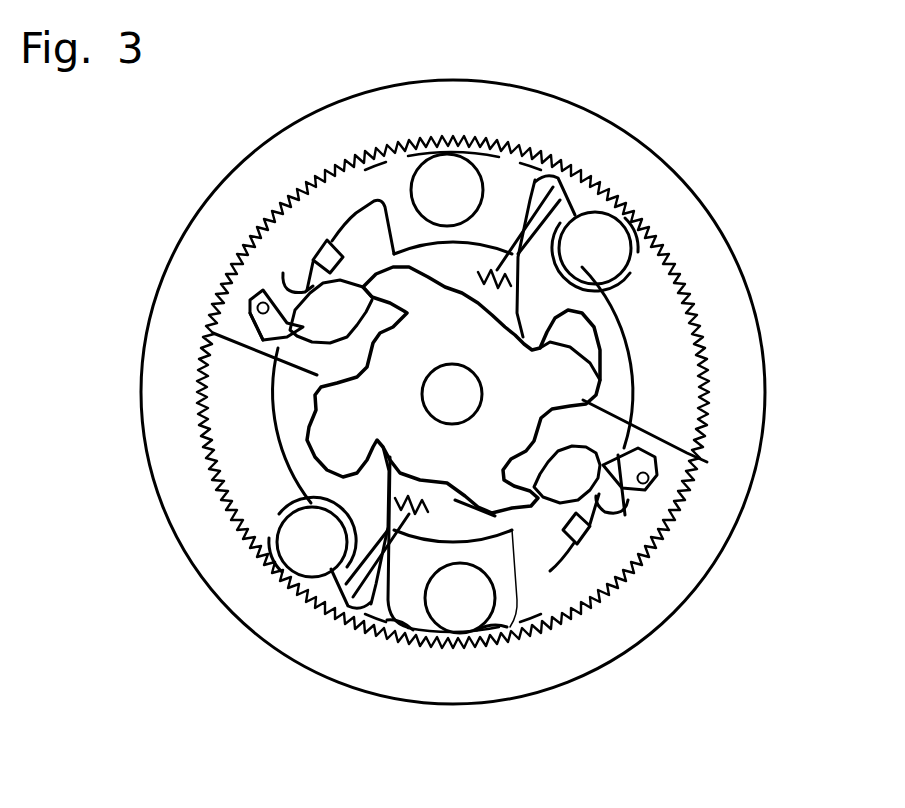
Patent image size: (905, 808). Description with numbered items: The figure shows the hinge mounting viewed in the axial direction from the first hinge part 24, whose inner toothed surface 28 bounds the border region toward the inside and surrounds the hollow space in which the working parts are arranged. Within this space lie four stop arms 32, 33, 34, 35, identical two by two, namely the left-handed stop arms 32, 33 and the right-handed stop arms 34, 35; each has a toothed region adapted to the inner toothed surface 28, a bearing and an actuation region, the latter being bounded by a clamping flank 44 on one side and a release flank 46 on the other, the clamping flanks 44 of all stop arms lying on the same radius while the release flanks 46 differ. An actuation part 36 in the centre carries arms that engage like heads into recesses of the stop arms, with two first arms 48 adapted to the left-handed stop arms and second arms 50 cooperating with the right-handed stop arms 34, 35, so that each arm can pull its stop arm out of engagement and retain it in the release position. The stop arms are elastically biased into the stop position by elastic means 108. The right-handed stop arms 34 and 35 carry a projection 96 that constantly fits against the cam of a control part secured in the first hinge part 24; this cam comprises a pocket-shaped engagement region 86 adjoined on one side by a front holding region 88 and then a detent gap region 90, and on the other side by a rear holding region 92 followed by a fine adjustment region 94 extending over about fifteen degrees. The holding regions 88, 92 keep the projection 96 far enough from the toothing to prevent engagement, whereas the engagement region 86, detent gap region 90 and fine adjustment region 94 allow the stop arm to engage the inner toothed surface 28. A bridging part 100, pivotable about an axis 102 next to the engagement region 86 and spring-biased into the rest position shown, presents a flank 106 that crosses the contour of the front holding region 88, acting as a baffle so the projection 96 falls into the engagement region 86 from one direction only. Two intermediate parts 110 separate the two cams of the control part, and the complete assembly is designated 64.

The first hinge part 24 is at (712, 514).
The inner toothed surface 28 is at (595, 578).
The stop arm 32 is at (665, 249).
The stop arm 33 is at (300, 500).
The stop arm 34 is at (517, 625).
The stop arm 35 is at (497, 185).
The actuation part 36 is at (540, 432).
The clamping flank 44 is at (605, 455).
The release flank 46 is at (548, 323).
The first arm 48 is at (598, 368).
The second arm 50 is at (392, 250).
The clutch assembly 64 is at (650, 92).
The engagement region 86 is at (262, 293).
The front holding region 88 is at (280, 432).
The detent gap region 90 is at (392, 543).
The rear holding region 92 is at (292, 310).
The fine adjustment region 94 is at (390, 250).
The projection 96 is at (322, 246).
The bridging part 100 is at (252, 333).
The axis 102 is at (257, 308).
The flank 106 is at (282, 364).
The elastic means 108 is at (500, 268).
The intermediate part 110 is at (412, 640).